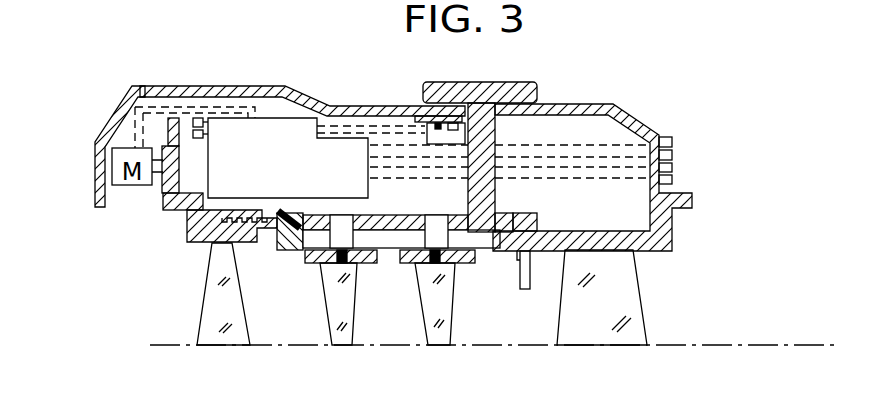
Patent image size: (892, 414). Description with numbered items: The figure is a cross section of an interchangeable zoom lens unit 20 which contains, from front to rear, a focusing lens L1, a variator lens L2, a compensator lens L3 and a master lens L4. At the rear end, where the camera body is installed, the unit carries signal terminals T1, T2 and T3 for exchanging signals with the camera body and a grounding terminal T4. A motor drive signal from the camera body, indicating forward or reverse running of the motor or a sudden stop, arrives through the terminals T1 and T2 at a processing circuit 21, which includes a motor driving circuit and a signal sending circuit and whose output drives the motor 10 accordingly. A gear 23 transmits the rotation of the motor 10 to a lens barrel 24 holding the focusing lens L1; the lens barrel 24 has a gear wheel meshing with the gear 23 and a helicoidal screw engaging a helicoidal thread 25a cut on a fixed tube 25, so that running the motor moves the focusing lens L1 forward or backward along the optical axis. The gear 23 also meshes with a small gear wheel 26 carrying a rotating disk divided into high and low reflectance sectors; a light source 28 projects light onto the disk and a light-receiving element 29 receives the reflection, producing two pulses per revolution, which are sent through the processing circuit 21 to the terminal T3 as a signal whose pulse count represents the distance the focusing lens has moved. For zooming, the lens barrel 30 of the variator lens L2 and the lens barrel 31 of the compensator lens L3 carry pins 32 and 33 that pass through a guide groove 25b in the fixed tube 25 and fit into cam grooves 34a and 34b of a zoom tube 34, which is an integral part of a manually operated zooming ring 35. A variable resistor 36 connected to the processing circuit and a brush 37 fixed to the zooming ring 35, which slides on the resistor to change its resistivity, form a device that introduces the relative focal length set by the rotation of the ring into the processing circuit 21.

The motor 10 is at (100, 170).
The zoom lens unit 20 is at (329, 92).
The processing circuit 21 is at (273, 125).
The gear 23 is at (165, 183).
The lens barrel 24 is at (190, 230).
The fixed tube 25 is at (290, 255).
The helicoidal thread 25a is at (262, 237).
The guide groove 25b is at (412, 276).
The small gear wheel 26 is at (168, 118).
The light source 28 is at (196, 118).
The light-receiving element 29 is at (207, 129).
The lens barrel 30 is at (365, 265).
The lens barrel 31 is at (470, 265).
The pin 32 is at (338, 245).
The pin 33 is at (385, 247).
The zoom tube 34 is at (490, 235).
The cam groove 34a is at (343, 216).
The cam groove 34b is at (477, 214).
The zooming ring 35 is at (537, 93).
The variable resistor 36 is at (392, 116).
The brush 37 is at (430, 120).
The signal terminal T1 is at (672, 142).
The signal terminal T2 is at (672, 155).
The signal terminal T3 is at (672, 168).
The grounding terminal T4 is at (672, 180).
The focusing lens L1 is at (219, 341).
The variator lens L2 is at (340, 341).
The compensator lens L3 is at (437, 341).
The master lens L4 is at (588, 341).